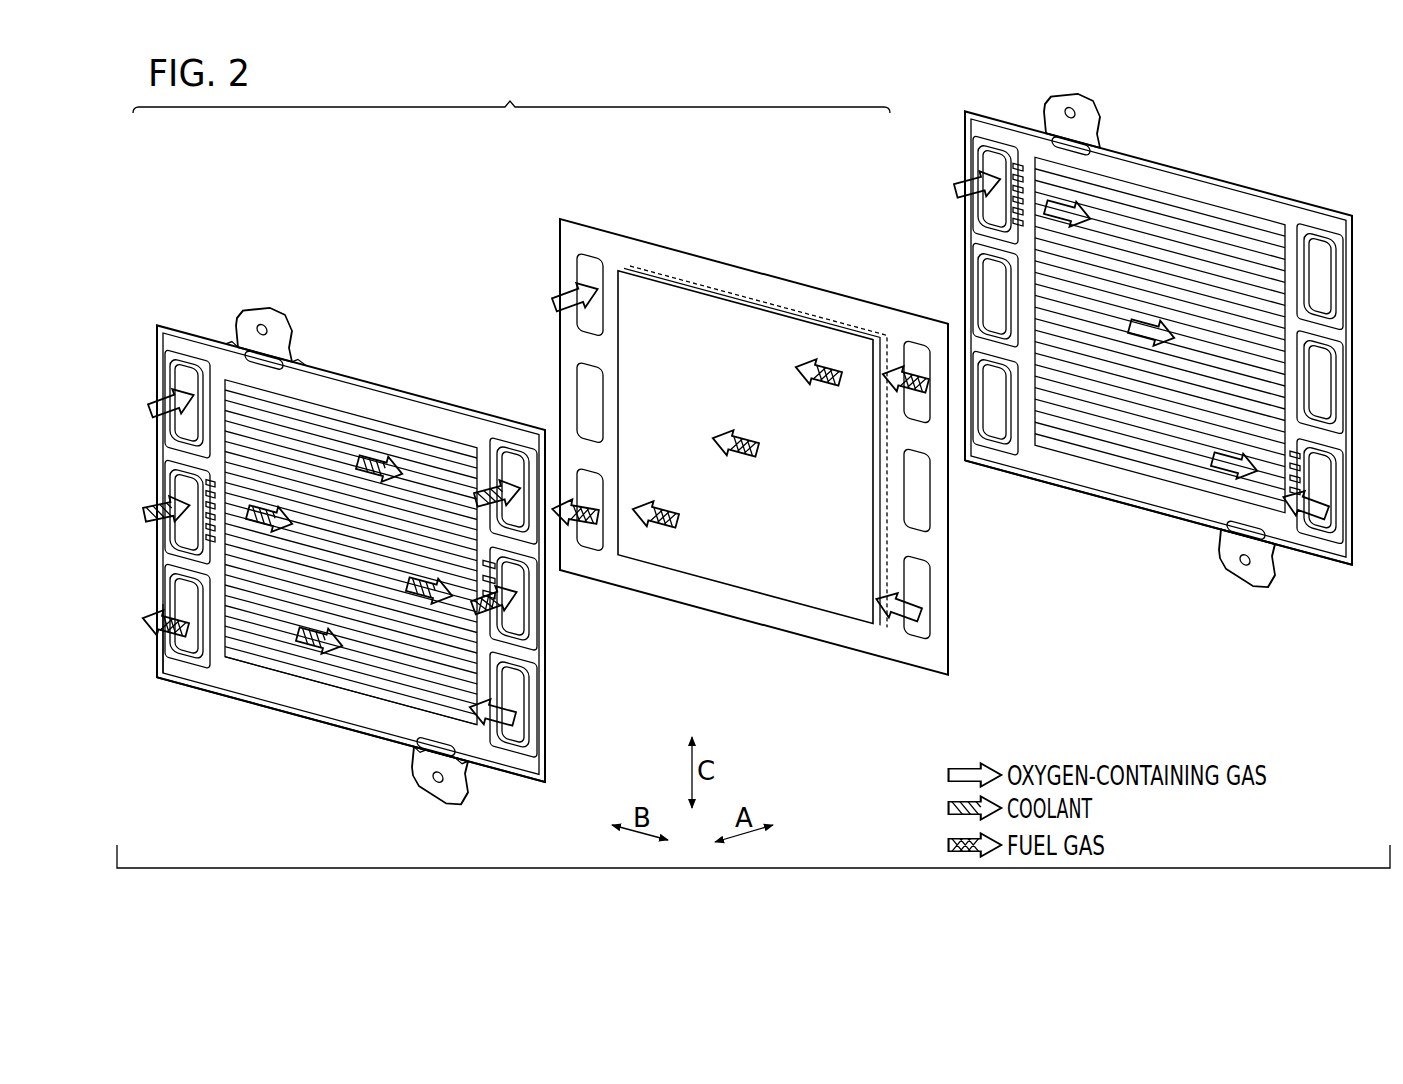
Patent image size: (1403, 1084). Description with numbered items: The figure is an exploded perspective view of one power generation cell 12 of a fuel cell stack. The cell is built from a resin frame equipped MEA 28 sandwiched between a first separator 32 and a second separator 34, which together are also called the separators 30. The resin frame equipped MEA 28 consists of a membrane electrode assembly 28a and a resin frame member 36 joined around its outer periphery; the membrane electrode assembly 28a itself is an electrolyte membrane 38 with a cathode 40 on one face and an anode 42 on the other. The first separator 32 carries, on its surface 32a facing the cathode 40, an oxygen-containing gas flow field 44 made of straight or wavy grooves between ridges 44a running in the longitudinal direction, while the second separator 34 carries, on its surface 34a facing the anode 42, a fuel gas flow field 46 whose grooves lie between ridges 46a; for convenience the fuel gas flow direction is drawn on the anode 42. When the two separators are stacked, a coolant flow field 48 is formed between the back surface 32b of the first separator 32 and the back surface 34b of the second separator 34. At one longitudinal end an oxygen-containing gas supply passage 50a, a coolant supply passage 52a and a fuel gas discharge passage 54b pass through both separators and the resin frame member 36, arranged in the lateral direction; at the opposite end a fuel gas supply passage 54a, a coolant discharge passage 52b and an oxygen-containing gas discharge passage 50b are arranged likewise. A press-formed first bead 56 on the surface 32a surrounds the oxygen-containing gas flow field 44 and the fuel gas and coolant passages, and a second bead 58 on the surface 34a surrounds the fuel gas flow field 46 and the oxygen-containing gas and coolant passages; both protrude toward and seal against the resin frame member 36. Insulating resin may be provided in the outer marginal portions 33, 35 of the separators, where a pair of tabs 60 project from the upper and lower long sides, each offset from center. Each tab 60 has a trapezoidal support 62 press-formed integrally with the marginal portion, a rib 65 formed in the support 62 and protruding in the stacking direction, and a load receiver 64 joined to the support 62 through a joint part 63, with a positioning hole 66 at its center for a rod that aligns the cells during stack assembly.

The power generation cell 12 is at (511, 93).
The resin frame equipped MEA 28 is at (559, 216).
The membrane electrode assembly 28a is at (752, 400).
The separators 30 is at (768, 442).
The first separator 32 is at (962, 113).
The surface of the first separator 32a is at (1340, 419).
The surface of the first separator 32b is at (1332, 443).
The outer marginal portion 33 is at (1106, 498).
The second separator 34 is at (155, 322).
The surface of the second separator 34a is at (531, 666).
The surface of the second separator 34b is at (529, 648).
The outer marginal portion 35 is at (323, 727).
The resin frame member 36 is at (718, 272).
The electrolyte membrane 38 is at (804, 318).
The cathode 40 is at (775, 305).
The anode 42 is at (667, 300).
The oxygen-containing gas flow field 44 is at (1160, 301).
The ridges 44a is at (1197, 213).
The fuel gas flow field 46 is at (351, 519).
The ridges 46a is at (384, 440).
The coolant flow field 48 is at (278, 663).
The oxygen-containing gas supply passage 50a is at (186, 379).
The oxygen-containing gas discharge passage 50b is at (517, 727).
The coolant supply passage 52a is at (186, 489).
The coolant discharge passage 52b is at (518, 622).
The fuel gas supply passage 54a is at (513, 460).
The fuel gas discharge passage 54b is at (186, 597).
The first bead 56 is at (1258, 208).
The second bead 58 is at (222, 683).
The tab 60 is at (729, 513).
The support 62 is at (302, 358).
The joint part 63 is at (238, 325).
The load receiver 64 is at (282, 318).
The rib 65 is at (258, 358).
The positioning hole 66 is at (268, 322).